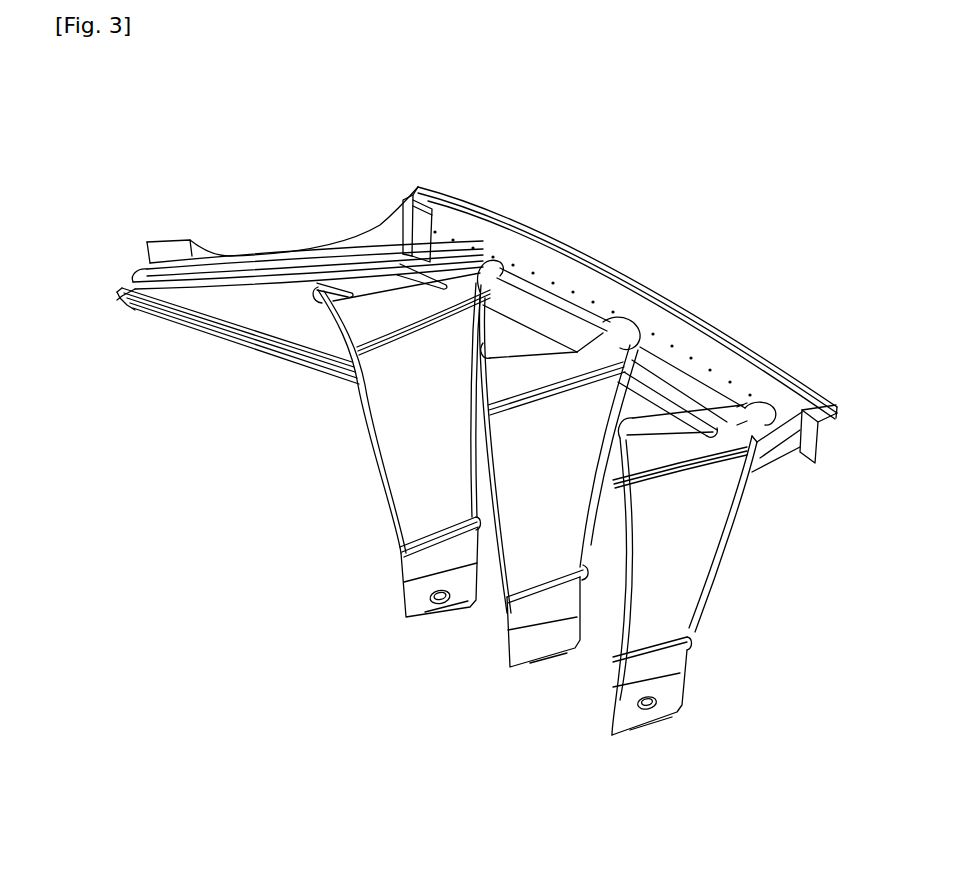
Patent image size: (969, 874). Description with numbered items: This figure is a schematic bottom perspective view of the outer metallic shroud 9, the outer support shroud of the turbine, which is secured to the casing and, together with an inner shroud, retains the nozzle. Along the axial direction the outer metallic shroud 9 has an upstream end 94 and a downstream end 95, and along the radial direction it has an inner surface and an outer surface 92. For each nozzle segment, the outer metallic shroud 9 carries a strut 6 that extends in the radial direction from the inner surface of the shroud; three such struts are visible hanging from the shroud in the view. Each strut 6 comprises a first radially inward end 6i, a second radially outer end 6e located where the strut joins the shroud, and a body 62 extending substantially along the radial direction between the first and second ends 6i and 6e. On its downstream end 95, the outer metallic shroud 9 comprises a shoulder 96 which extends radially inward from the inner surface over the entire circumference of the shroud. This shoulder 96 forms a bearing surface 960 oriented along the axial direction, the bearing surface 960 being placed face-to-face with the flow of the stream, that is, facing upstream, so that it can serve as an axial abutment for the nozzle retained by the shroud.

The upstream end 94 is at (601, 271).
The outer surface 92 is at (315, 195).
The outer metallic shroud 9 is at (459, 304).
The downstream end 95 is at (216, 295).
The shoulder 96 is at (130, 340).
The bearing surface 960 is at (242, 342).
The strut 6 is at (399, 418).
The second radially outer end 6e is at (383, 342).
The first radially inward end 6i is at (405, 567).
The body 62 is at (757, 534).